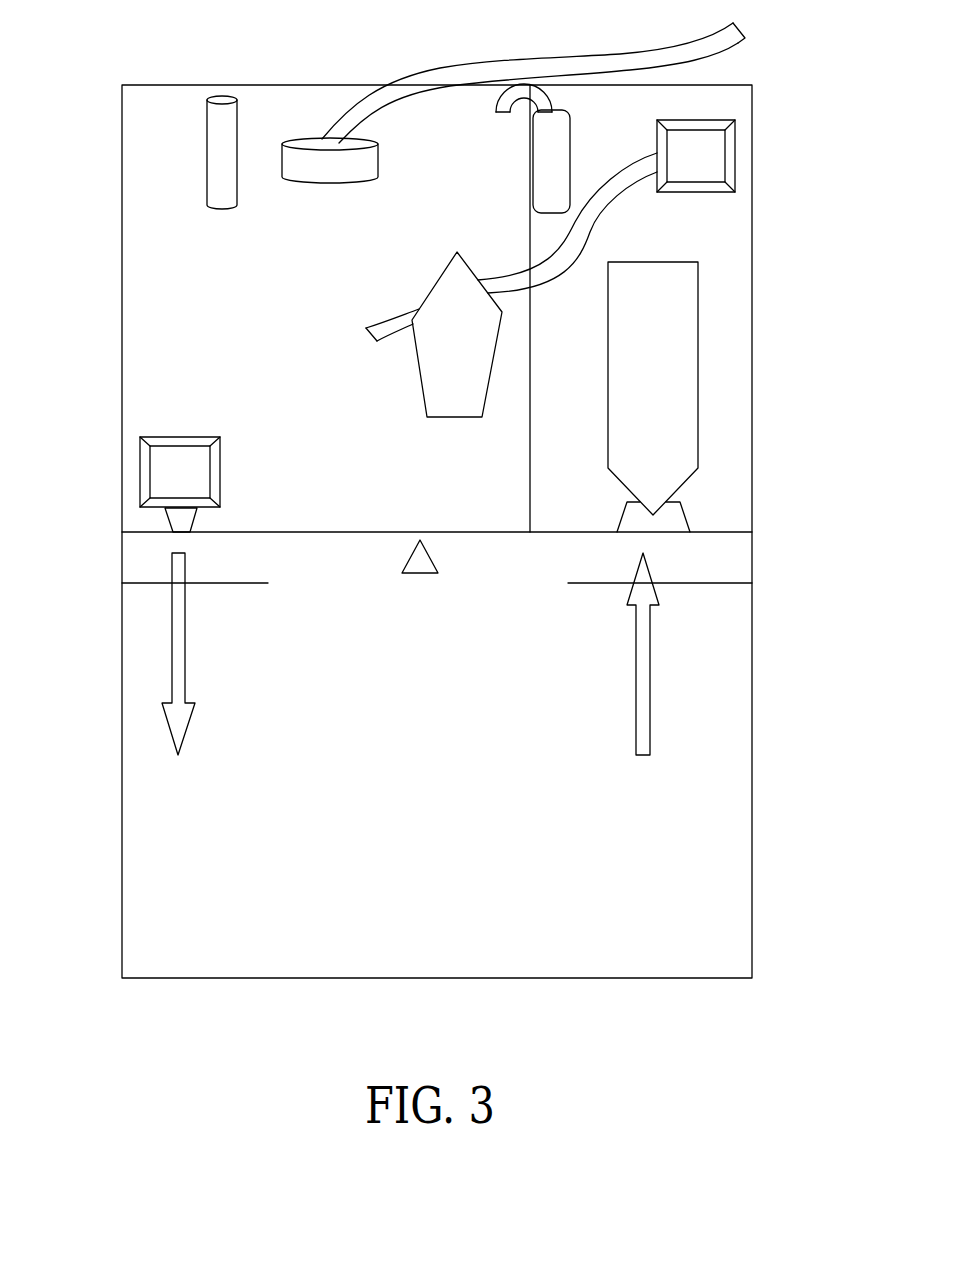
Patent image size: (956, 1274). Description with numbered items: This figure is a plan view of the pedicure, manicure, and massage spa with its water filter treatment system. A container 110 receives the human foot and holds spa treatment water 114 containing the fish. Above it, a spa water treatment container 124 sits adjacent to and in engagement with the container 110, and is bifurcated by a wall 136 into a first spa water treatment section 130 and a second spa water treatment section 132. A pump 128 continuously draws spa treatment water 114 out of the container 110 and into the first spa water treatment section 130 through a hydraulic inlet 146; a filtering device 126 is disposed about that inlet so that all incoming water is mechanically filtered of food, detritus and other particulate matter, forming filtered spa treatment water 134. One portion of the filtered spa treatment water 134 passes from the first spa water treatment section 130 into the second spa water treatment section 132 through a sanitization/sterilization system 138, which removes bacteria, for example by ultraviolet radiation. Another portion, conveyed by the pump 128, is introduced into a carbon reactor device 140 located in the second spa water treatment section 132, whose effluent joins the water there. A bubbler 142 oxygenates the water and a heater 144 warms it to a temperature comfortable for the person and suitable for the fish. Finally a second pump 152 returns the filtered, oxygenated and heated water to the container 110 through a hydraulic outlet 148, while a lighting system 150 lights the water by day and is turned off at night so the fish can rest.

The container 110 is at (752, 805).
The spa treatment water 114 is at (450, 872).
The spa water treatment container 124 is at (122, 295).
The filtering device 126 is at (673, 344).
The pump 128 is at (717, 167).
The first spa water treatment section 130 is at (582, 427).
The second spa water treatment section 132 is at (231, 275).
The filtered spa treatment water 134 is at (647, 254).
The wall 136 is at (530, 468).
The sanitization/sterilization system 138 is at (555, 137).
The carbon reactor device 140 is at (433, 353).
The bubbler 142 is at (300, 160).
The heater 144 is at (213, 128).
The hydraulic inlet 146 is at (675, 522).
The hydraulic outlet 148 is at (182, 520).
The lighting system 150 is at (427, 563).
The second pump 152 is at (200, 483).